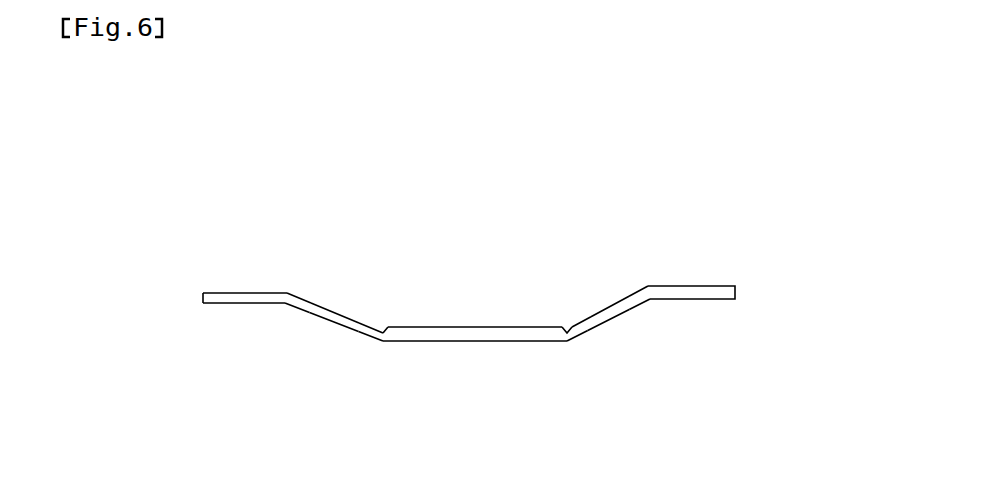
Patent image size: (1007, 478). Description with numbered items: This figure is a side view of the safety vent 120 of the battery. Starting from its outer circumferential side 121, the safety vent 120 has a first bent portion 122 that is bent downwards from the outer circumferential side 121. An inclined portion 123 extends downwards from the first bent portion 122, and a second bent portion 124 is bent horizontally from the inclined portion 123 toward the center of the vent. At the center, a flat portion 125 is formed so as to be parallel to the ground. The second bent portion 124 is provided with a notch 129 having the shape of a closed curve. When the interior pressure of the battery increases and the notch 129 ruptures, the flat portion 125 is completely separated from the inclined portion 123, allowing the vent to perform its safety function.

The safety vent 120 is at (135, 158).
The outer circumferential side 121 is at (227, 299).
The first bent portion 122 is at (285, 307).
The inclined portion 123 is at (335, 322).
The second bent portion 124 is at (383, 340).
The flat portion 125 is at (487, 342).
The notch 129 is at (385, 300).